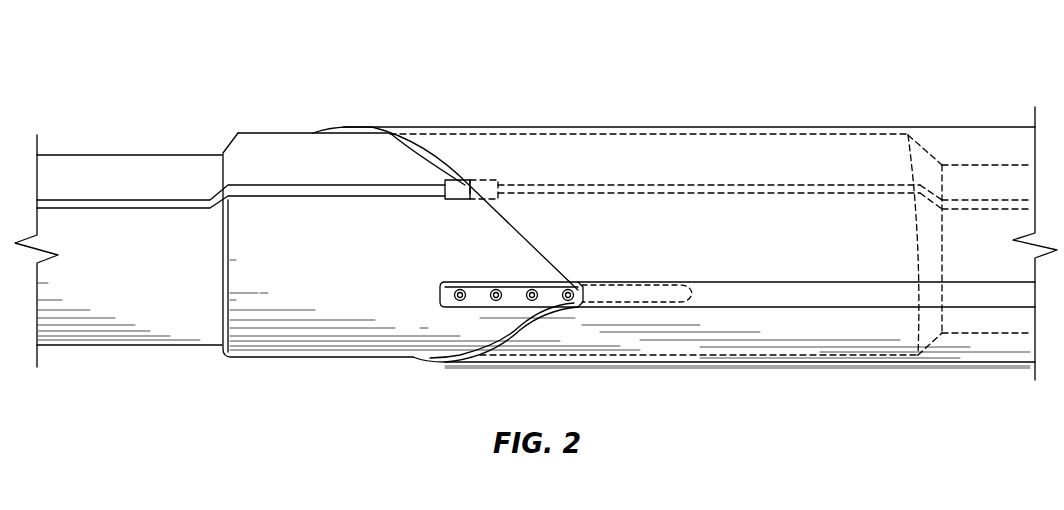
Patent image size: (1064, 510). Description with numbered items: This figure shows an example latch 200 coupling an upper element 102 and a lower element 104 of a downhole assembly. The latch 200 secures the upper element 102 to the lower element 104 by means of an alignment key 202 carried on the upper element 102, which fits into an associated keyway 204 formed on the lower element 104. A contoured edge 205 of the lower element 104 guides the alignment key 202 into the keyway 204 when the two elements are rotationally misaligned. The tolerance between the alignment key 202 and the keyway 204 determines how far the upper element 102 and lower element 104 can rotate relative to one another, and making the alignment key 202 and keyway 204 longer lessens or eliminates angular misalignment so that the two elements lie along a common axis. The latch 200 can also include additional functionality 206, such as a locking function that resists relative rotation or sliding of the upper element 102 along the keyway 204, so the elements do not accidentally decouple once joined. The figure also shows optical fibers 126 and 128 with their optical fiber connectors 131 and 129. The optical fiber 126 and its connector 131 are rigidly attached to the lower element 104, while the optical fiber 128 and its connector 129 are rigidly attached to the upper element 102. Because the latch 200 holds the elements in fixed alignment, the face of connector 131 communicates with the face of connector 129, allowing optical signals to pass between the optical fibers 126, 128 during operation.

The upper element 102 is at (262, 133).
The lower element 104 is at (693, 170).
The optical fiber 126 is at (875, 185).
The optical fiber 128 is at (118, 198).
The optical fiber connector 129 is at (462, 180).
The optical fiber connector 131 is at (482, 188).
The latch 200 is at (490, 255).
The alignment key 202 is at (440, 292).
The keyway 204 is at (839, 288).
The contoured edge 205 is at (397, 133).
The additional functionality 206 is at (640, 287).